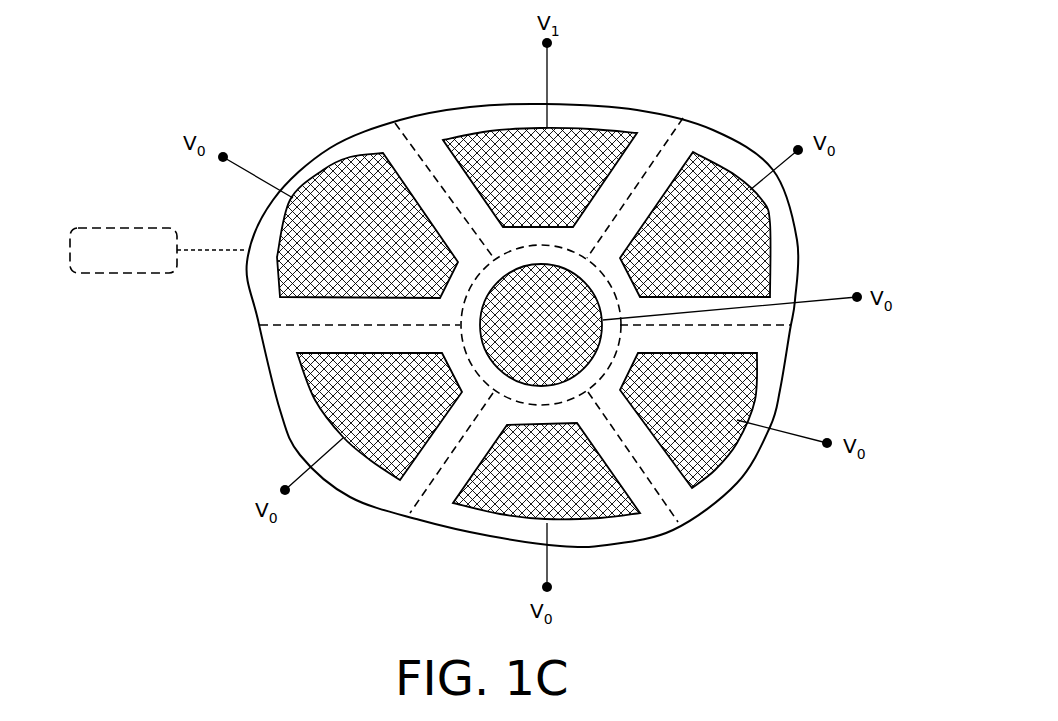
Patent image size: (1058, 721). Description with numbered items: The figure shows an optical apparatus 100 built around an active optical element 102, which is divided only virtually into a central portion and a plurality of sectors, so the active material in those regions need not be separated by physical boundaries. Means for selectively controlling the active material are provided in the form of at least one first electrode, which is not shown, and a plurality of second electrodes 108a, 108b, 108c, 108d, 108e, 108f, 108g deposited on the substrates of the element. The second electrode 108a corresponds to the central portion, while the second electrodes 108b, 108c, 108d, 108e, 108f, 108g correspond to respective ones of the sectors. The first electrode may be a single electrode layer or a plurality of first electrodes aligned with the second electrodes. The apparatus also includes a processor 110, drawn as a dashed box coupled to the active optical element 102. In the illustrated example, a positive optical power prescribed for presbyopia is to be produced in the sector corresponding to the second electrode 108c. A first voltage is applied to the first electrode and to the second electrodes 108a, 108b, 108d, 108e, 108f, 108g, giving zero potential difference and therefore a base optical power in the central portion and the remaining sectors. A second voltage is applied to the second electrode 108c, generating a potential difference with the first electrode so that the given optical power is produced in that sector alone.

The optical apparatus 100 is at (145, 519).
The active optical element 102 is at (523, 285).
The second electrode 108a is at (371, 325).
The second electrode 108b is at (350, 179).
The second electrode 108c is at (518, 121).
The second electrode 108d is at (716, 177).
The second electrode 108e is at (774, 420).
The second electrode 108f is at (589, 531).
The second electrode 108g is at (379, 472).
The processor 110 is at (158, 190).